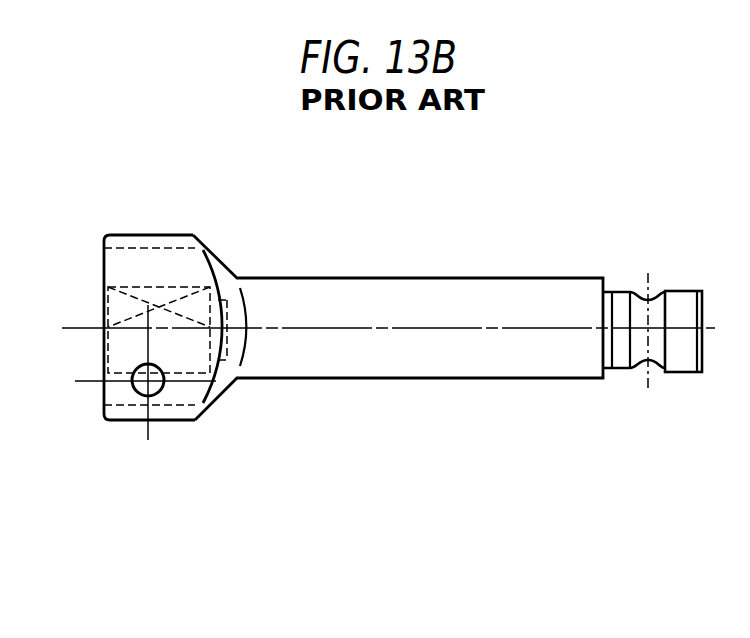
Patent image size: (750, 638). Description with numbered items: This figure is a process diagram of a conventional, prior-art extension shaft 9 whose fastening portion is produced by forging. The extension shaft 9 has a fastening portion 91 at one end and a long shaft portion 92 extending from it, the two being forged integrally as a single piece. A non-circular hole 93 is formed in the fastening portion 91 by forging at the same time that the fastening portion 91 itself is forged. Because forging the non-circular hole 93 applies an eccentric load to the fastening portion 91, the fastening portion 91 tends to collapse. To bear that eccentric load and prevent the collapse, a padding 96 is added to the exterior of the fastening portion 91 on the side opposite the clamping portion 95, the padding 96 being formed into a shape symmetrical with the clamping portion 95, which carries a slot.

The extension shaft 9 is at (347, 199).
The fastening portion 91 is at (151, 206).
The shaft portion 92 is at (458, 251).
The non-circular hole 93 is at (182, 250).
The clamping portion 95 is at (118, 410).
The padding 96 is at (121, 243).